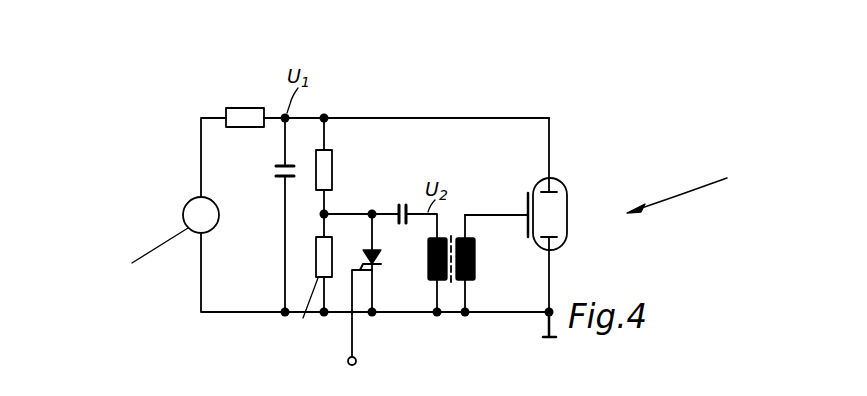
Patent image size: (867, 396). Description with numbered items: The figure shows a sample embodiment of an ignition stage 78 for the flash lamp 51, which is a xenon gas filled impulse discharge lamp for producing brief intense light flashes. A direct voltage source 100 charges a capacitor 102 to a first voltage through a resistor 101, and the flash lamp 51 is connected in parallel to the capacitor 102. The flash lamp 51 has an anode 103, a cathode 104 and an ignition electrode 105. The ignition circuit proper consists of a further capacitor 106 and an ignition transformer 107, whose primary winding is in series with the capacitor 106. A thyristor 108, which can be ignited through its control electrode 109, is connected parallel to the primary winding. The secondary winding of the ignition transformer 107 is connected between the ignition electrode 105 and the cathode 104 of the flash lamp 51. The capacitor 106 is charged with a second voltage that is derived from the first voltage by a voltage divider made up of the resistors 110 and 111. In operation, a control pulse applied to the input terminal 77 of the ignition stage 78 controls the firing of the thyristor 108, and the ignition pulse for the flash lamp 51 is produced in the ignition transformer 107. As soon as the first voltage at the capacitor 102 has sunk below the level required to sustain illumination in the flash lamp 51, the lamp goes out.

The direct voltage source 100 is at (186, 200).
The resistor 101 is at (245, 108).
The capacitor 102 is at (277, 170).
The anode 103 is at (552, 181).
The cathode 104 is at (558, 245).
The ignition electrode 105 is at (525, 210).
The further capacitor 106 is at (400, 205).
The ignition transformer 107 is at (453, 278).
The thyristor 108 is at (381, 257).
The control electrode 109 is at (352, 270).
The resistor 110 is at (318, 252).
The resistor 111 is at (326, 178).
The flash lamp 51 is at (556, 217).
The input terminal 77 is at (356, 358).
The ignition stage 78 is at (697, 166).